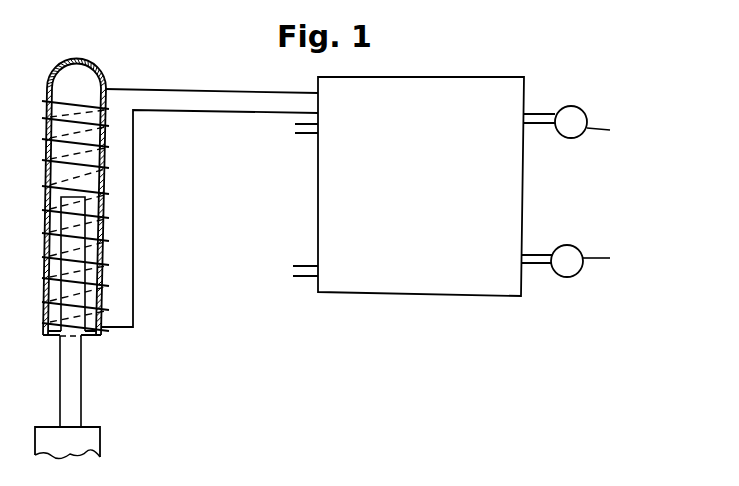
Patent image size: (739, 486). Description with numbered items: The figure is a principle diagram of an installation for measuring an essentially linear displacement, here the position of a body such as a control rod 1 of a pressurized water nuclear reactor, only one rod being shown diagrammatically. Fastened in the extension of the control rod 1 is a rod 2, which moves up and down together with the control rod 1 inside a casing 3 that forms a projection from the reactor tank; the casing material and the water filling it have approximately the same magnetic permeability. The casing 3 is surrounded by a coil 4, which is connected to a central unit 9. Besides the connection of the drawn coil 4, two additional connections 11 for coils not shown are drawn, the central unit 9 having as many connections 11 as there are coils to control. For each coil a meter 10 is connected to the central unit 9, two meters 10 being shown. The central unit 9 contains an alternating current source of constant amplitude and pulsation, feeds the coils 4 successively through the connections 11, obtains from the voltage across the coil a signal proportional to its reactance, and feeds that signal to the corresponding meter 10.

The control rod 1 is at (93, 446).
The rod 2 is at (72, 385).
The casing 3 is at (73, 60).
The coil 4 is at (62, 150).
The central unit 9 is at (473, 284).
The meter 10 is at (579, 113).
The connection 11 is at (302, 136).